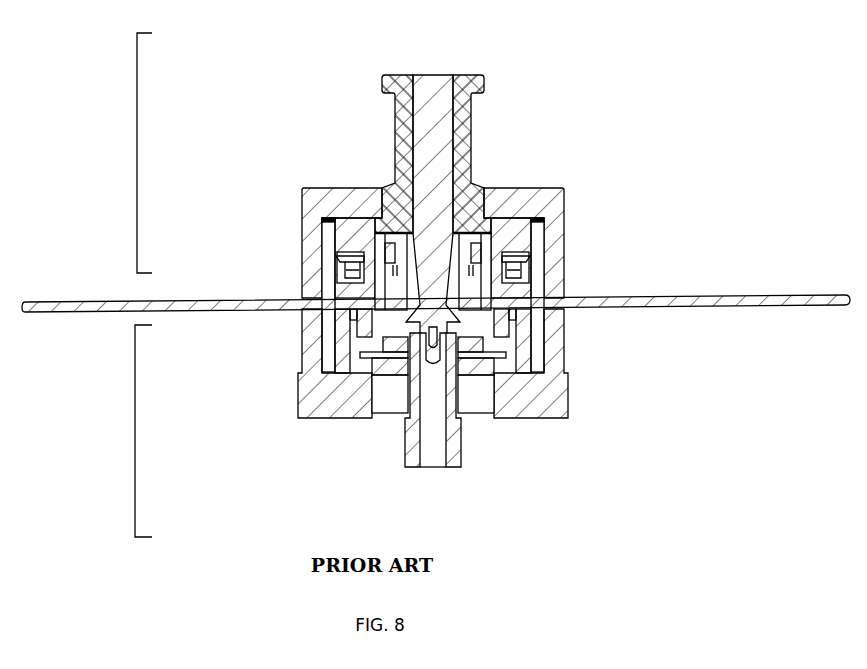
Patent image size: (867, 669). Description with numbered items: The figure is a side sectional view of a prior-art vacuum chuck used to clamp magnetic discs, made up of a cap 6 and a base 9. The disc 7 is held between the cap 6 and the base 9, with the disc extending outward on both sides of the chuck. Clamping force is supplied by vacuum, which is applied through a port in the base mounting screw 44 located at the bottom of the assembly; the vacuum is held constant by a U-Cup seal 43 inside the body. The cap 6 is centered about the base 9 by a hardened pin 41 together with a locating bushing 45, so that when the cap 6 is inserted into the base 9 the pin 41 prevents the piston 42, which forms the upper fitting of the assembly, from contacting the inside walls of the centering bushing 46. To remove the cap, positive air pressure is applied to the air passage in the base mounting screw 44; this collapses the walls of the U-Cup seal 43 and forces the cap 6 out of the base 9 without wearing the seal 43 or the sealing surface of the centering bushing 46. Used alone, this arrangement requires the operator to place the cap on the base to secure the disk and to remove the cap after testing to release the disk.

The cap 6 is at (122, 153).
The base 9 is at (122, 431).
The disc 7 is at (750, 307).
The hardened pin 41 is at (403, 280).
The piston 42 is at (482, 177).
The U-Cup seal 43 is at (337, 260).
The base mounting screw 44 is at (402, 452).
The locating bushing 45 is at (357, 218).
The centering bushing 46 is at (572, 390).